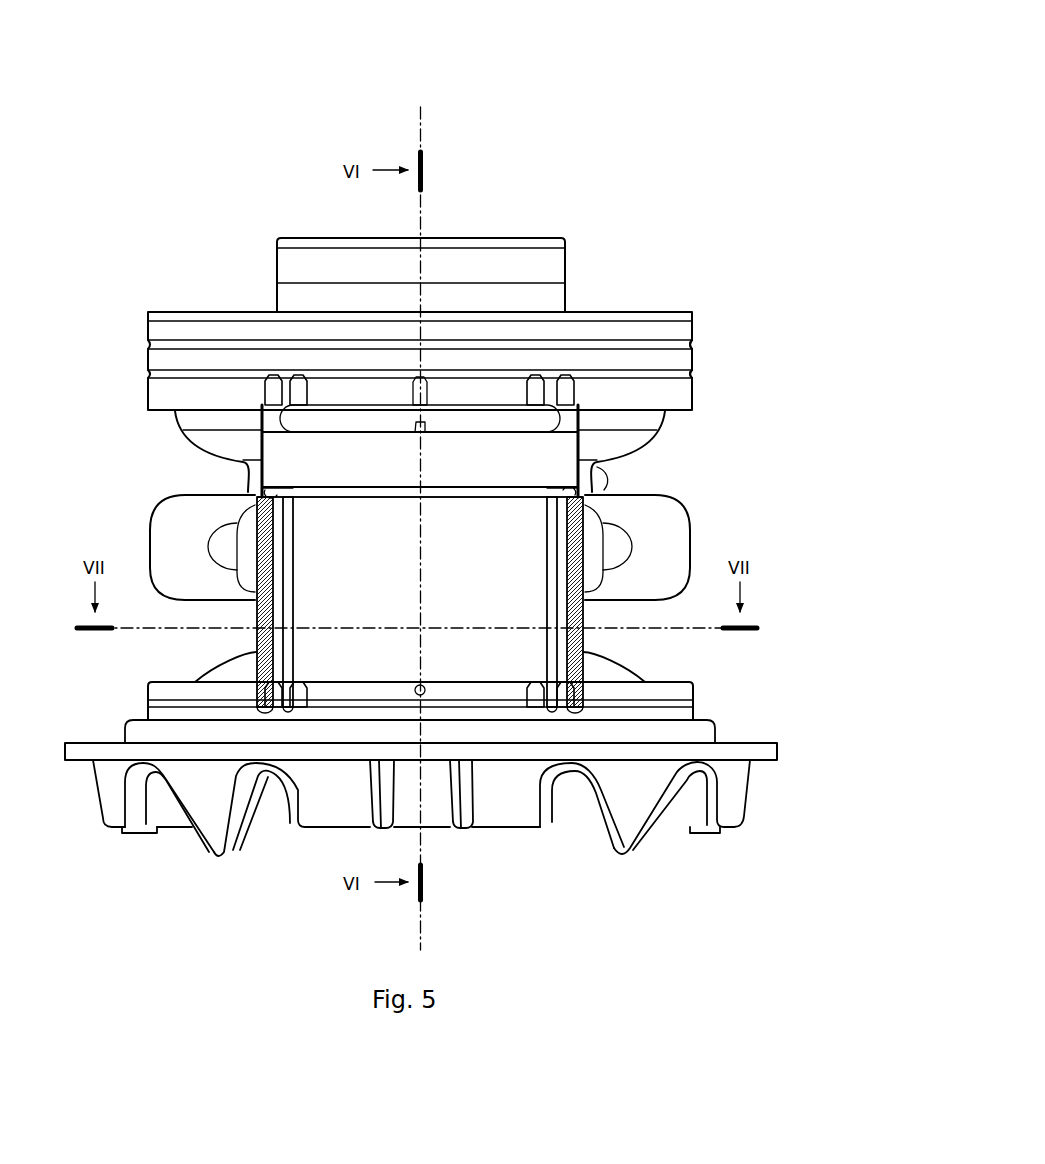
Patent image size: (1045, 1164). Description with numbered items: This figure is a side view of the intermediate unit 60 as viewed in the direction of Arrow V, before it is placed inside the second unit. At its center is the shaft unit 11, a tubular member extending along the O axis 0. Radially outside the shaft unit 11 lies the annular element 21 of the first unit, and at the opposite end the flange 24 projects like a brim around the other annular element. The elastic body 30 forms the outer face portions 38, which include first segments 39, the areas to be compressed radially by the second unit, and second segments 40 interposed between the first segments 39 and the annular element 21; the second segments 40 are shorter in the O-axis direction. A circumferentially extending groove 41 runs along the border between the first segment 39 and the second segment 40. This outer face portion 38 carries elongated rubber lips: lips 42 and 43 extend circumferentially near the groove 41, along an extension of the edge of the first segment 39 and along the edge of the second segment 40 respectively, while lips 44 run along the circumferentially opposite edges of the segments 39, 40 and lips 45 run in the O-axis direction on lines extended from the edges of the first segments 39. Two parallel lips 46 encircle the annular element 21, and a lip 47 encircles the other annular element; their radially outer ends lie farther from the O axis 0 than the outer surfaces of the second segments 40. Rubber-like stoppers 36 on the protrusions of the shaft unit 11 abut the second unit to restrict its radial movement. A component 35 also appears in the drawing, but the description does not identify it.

The O axis 0 is at (425, 108).
The shaft unit 11 is at (515, 258).
The annular element 21 is at (212, 360).
The flange 24 is at (762, 750).
The elastic body 30 is at (716, 432).
The base body 35 is at (505, 810).
The stoppers 36 is at (172, 528).
The outer face portions 38 is at (568, 358).
The first segments 39 is at (380, 523).
The second segments 40 is at (360, 392).
The groove 41 is at (597, 478).
The lips 42 is at (282, 491).
The lips 43 is at (205, 428).
The lips 44 is at (180, 383).
The lips 45 is at (305, 385).
The lips 46 is at (696, 341).
The lip 47 is at (696, 706).
The intermediate unit 60 is at (643, 92).